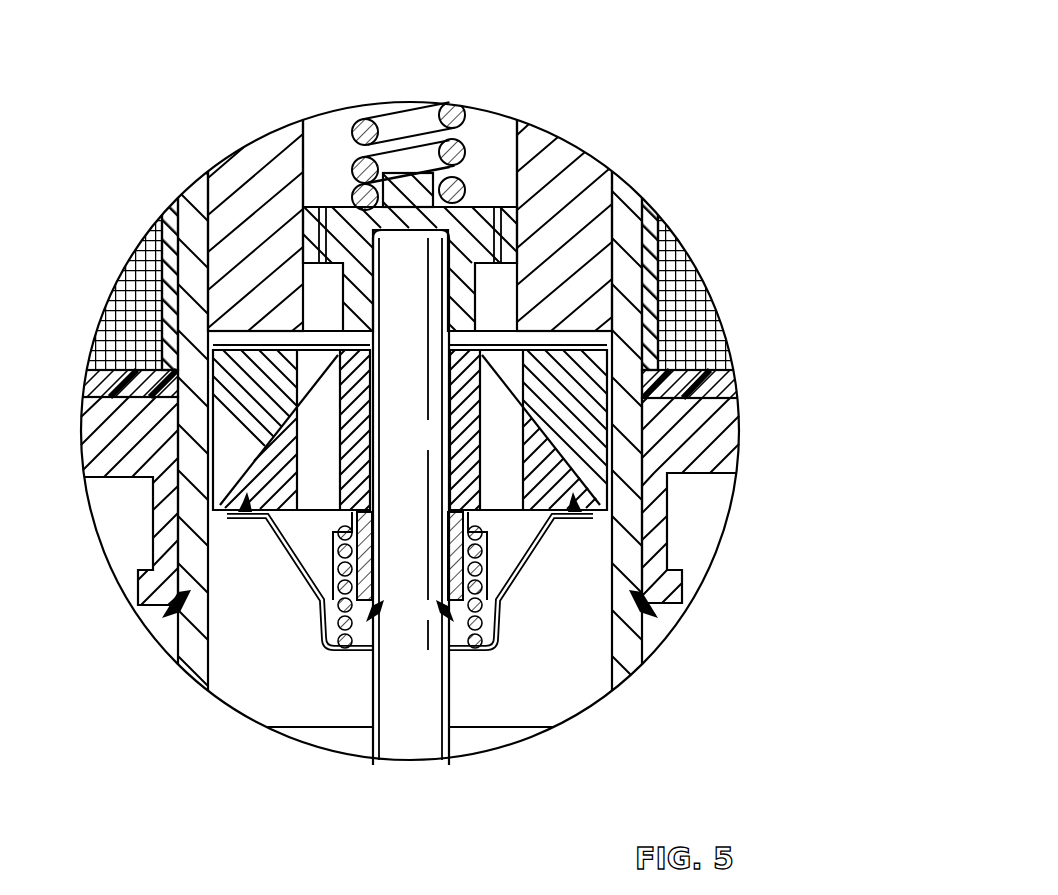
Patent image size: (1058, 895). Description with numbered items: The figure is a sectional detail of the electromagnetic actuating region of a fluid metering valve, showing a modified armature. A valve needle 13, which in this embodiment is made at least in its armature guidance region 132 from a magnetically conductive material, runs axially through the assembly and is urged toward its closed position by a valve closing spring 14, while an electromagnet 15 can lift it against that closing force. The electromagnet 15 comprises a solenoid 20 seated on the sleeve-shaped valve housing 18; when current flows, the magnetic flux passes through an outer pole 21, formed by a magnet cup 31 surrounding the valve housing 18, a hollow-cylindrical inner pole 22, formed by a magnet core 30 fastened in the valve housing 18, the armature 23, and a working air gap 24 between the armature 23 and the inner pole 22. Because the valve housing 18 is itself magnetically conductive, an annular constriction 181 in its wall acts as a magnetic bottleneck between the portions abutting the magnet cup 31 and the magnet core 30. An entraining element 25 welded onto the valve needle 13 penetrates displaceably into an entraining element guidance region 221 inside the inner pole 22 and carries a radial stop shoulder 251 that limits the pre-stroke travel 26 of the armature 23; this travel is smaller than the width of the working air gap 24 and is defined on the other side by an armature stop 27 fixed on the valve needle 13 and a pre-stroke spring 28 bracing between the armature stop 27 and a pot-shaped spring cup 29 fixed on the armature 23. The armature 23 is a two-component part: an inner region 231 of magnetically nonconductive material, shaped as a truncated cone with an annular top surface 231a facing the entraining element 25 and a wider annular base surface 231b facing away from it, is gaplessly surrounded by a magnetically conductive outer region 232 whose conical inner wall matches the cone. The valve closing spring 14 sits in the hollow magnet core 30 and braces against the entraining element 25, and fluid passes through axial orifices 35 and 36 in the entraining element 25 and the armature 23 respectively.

The valve needle 13 is at (405, 740).
The armature guidance region 132 is at (447, 435).
The valve closing spring 14 is at (452, 110).
The electromagnet 15 is at (128, 497).
The valve housing 18 is at (622, 225).
The annular constriction 181 is at (187, 330).
The solenoid 20 is at (677, 289).
The outer pole 21 is at (737, 414).
The inner pole 22 is at (567, 146).
The entraining element guidance region 221 is at (293, 222).
The armature 23 is at (612, 518).
The inner region 231 is at (272, 460).
The annular top surface 231a is at (605, 276).
The annular base surface 231b is at (647, 550).
The outer region 232 is at (250, 420).
The working air gap 24 is at (600, 309).
The entraining element 25 is at (334, 205).
The radial stop shoulder 251 is at (197, 347).
The pre-stroke travel 26 is at (362, 350).
The armature stop 27 is at (490, 548).
The pre-stroke spring 28 is at (333, 606).
The spring cup 29 is at (292, 596).
The magnet core 30 is at (582, 197).
The magnet cup 31 is at (693, 447).
The axial orifice 35 is at (503, 205).
The axial orifice 36 is at (507, 490).